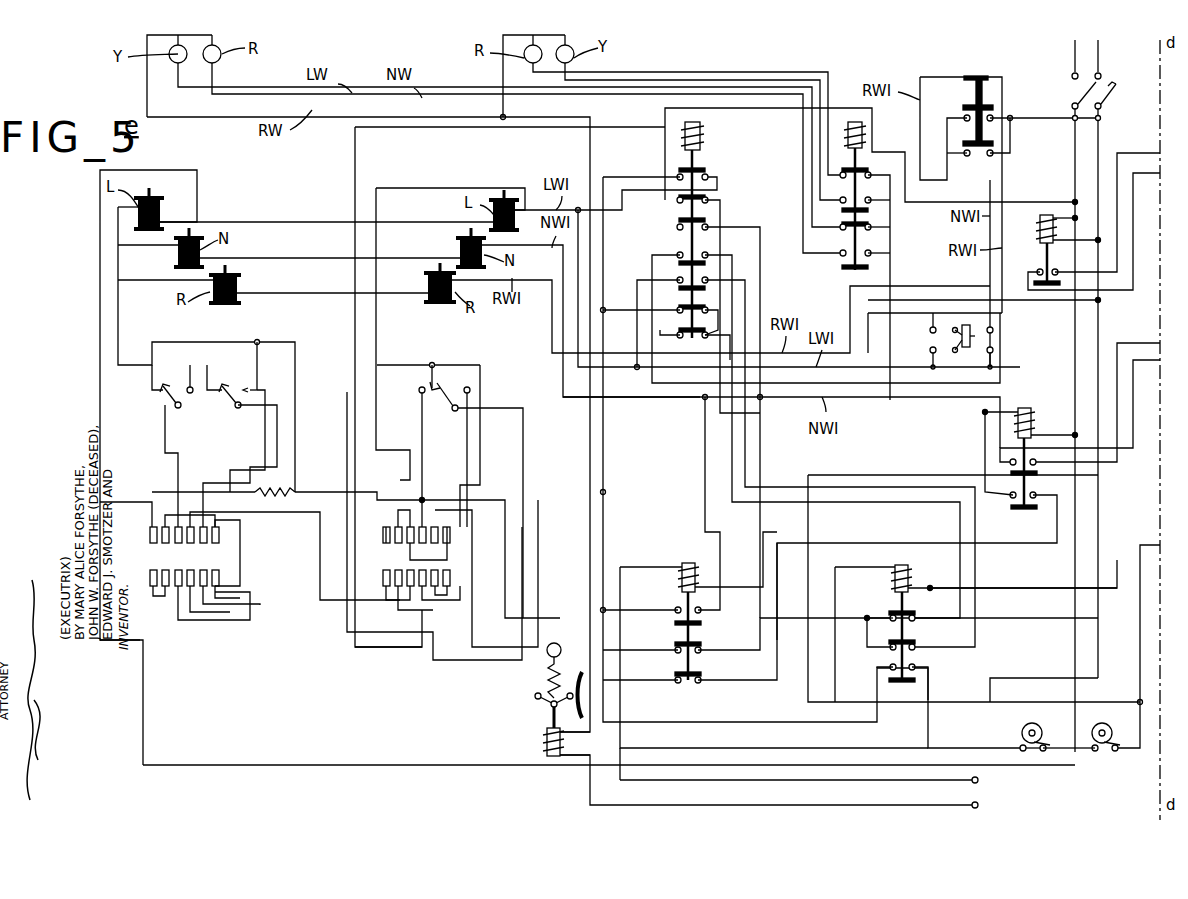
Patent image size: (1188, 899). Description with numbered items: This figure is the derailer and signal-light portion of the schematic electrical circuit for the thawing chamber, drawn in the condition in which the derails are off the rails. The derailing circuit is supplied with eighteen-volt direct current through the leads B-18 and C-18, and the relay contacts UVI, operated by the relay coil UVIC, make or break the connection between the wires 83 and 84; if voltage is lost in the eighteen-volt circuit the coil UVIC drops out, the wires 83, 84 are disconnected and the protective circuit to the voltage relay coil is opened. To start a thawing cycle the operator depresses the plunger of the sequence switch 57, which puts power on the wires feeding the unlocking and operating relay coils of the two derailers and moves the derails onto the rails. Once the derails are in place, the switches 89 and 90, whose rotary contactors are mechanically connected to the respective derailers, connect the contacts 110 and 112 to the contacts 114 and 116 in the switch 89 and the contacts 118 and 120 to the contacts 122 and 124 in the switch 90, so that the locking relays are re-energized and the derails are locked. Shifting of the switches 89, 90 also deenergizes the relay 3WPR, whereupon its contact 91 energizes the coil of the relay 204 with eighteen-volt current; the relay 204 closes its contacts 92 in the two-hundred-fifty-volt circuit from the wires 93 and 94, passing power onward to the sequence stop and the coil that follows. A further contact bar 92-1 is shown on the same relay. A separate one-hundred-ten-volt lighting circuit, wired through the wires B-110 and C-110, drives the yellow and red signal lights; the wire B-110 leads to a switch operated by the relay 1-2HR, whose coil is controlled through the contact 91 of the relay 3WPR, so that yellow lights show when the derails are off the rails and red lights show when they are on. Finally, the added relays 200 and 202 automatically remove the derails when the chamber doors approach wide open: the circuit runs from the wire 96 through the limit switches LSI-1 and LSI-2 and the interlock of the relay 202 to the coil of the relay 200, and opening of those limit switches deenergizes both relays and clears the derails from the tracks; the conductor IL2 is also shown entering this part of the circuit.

The sequence switch 57 is at (972, 66).
The wire 83 is at (1136, 148).
The wire 84 is at (1135, 180).
The switch 89 is at (376, 568).
The switch 90 is at (181, 564).
The contact of relay 3WPR 91 is at (678, 325).
The contacts of relay 204 92 is at (1036, 470).
The relay contact 92-1 is at (1012, 500).
The wire 93 is at (1135, 336).
The wire 94 is at (1128, 456).
The wire 96 is at (1143, 606).
The contact 110 is at (402, 544).
The contact 112 is at (381, 538).
The contact 114 is at (380, 562).
The contact 116 is at (388, 586).
The contact 118 is at (166, 543).
The contact 120 is at (148, 538).
The contact 122 is at (162, 570).
The contact 124 is at (158, 584).
The relay 200 is at (706, 574).
The relay 202 is at (894, 578).
The relay 204 is at (1040, 424).
The relay 3WPR is at (706, 136).
The relay 1-2HR is at (850, 120).
The relay coil UVIC is at (1048, 212).
The relay contacts UVI is at (1042, 290).
The lead C-18 is at (1075, 56).
The lead B-18 is at (1100, 58).
The conductor IL2 is at (1118, 560).
The limit switch LSI-1 is at (1020, 735).
The limit switch LSI-2 is at (1108, 760).
The wire B-110 is at (978, 778).
The wire C-110 is at (978, 806).